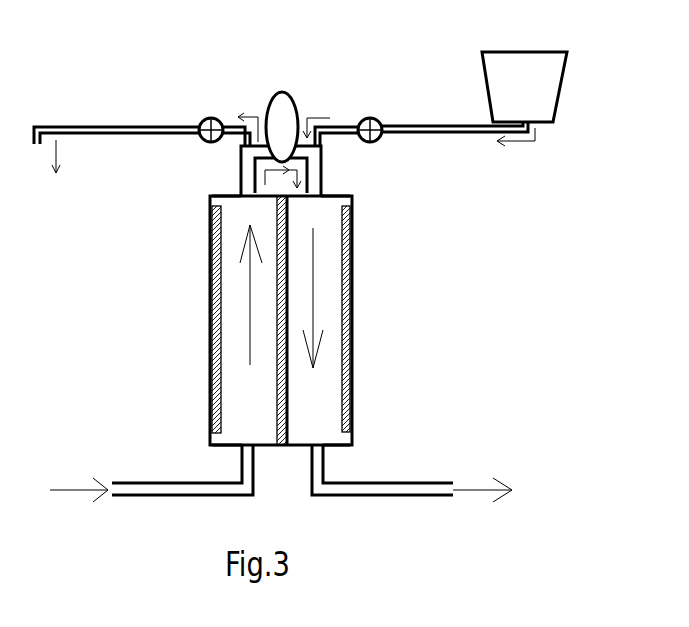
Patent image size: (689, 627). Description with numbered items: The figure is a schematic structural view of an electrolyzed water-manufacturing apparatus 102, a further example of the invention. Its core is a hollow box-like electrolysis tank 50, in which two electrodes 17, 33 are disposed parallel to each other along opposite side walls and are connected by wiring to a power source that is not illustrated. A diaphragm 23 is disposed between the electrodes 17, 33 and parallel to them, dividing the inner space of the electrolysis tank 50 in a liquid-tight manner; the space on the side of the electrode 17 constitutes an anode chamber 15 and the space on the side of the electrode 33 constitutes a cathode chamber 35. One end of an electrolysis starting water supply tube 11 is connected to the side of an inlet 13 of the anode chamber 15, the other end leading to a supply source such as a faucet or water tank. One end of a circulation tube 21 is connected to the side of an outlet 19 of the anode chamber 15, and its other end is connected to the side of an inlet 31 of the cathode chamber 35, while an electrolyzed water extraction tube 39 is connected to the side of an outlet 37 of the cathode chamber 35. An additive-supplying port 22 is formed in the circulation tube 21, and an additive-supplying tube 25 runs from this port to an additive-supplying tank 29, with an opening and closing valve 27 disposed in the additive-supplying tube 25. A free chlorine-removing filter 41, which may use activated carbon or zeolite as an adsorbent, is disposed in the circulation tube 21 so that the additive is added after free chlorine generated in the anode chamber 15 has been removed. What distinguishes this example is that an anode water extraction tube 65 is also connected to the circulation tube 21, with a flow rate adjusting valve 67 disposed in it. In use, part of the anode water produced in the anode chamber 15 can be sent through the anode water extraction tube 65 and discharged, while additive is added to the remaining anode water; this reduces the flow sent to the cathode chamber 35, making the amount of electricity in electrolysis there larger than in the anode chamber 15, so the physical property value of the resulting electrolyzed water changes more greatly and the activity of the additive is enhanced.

The electrolyzed water-manufacturing apparatus 102 is at (378, 62).
The electrolysis tank 50 is at (197, 275).
The electrolysis starting water supply tube 11 is at (197, 495).
The inlet 13 is at (247, 440).
The anode chamber 15 is at (233, 353).
The electrode 17 is at (210, 318).
The outlet 19 is at (247, 198).
The circulation tube 21 is at (240, 148).
The additive-supplying port 22 is at (320, 150).
The diaphragm 23 is at (283, 303).
The additive-supplying tube 25 is at (475, 130).
The opening and closing valve 27 is at (372, 118).
The additive-supplying tank 29 is at (560, 99).
The inlet 31 is at (313, 197).
The electrode 33 is at (352, 330).
The cathode chamber 35 is at (320, 397).
The outlet 37 is at (318, 442).
The electrolyzed water extraction tube 39 is at (387, 497).
The free chlorine-removing filter 41 is at (270, 95).
The anode water extraction tube 65 is at (168, 133).
The flow rate adjusting valve 67 is at (200, 120).